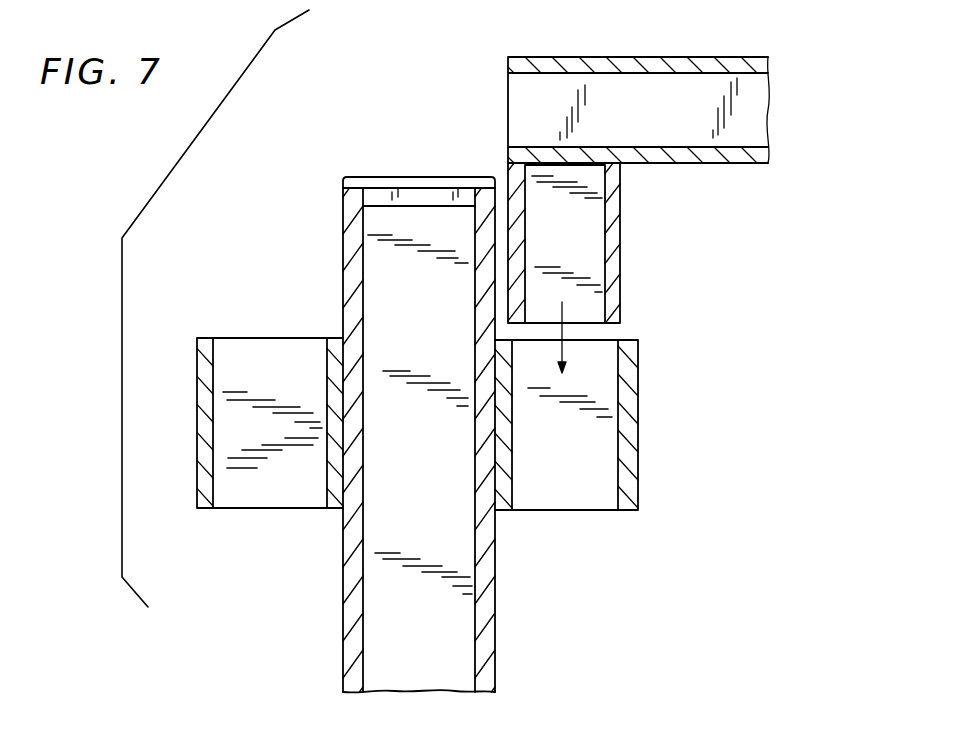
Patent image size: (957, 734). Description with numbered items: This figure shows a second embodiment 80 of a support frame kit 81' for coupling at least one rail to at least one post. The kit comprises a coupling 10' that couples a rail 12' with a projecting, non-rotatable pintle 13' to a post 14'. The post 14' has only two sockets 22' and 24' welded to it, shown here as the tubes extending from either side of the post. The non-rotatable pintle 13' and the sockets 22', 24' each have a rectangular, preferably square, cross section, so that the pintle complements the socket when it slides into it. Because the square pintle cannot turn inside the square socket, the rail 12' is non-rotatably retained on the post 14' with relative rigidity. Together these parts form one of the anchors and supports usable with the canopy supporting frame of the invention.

The coupling 10' is at (417, 389).
The rail 12' is at (638, 92).
The non-rotatable pintle 13' is at (598, 243).
The post 14' is at (376, 440).
The socket 22' is at (270, 393).
The socket 24' is at (599, 396).
The second embodiment 80 is at (362, 158).
The support frame kit 81' is at (649, 367).